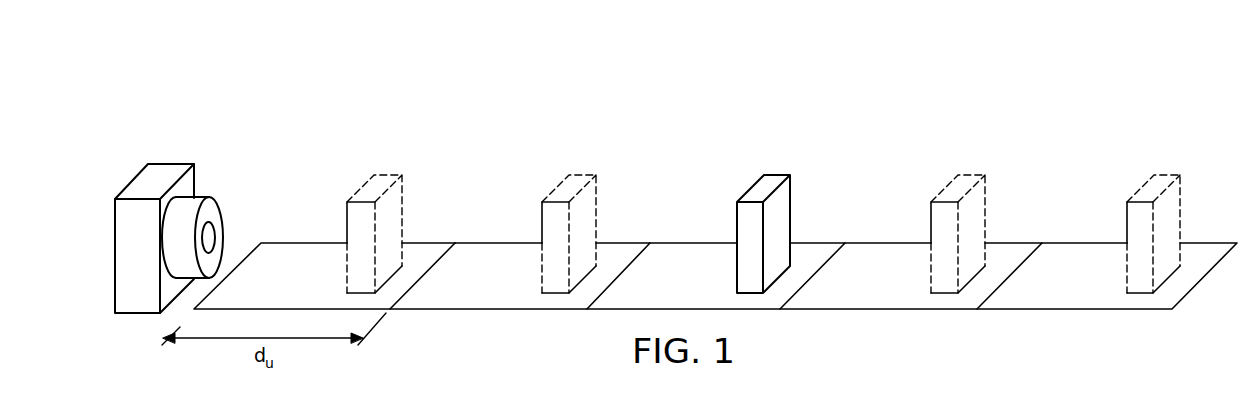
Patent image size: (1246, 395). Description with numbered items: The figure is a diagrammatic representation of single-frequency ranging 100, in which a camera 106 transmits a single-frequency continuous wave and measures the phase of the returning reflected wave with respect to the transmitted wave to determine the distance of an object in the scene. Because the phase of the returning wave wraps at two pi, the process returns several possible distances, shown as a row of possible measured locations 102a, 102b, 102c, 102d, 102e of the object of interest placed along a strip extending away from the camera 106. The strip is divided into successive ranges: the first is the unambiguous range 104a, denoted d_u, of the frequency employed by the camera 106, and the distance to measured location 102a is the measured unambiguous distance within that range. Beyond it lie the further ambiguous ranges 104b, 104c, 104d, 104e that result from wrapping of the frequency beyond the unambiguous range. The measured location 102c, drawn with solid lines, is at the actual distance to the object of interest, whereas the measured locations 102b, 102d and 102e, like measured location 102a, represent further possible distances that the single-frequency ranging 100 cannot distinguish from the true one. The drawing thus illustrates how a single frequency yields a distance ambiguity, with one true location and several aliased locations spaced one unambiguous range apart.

The single-frequency ranging 100 is at (495, 94).
The measured location 102a is at (388, 175).
The measured location 102b is at (582, 175).
The measured location 102c is at (777, 175).
The measured location 102d is at (973, 175).
The measured location 102e is at (1167, 175).
The unambiguous range 104a is at (300, 242).
The ambiguous range 104b is at (495, 242).
The ambiguous range 104c is at (690, 242).
The ambiguous range 104d is at (880, 242).
The ambiguous range 104e is at (1070, 242).
The camera 106 is at (170, 163).